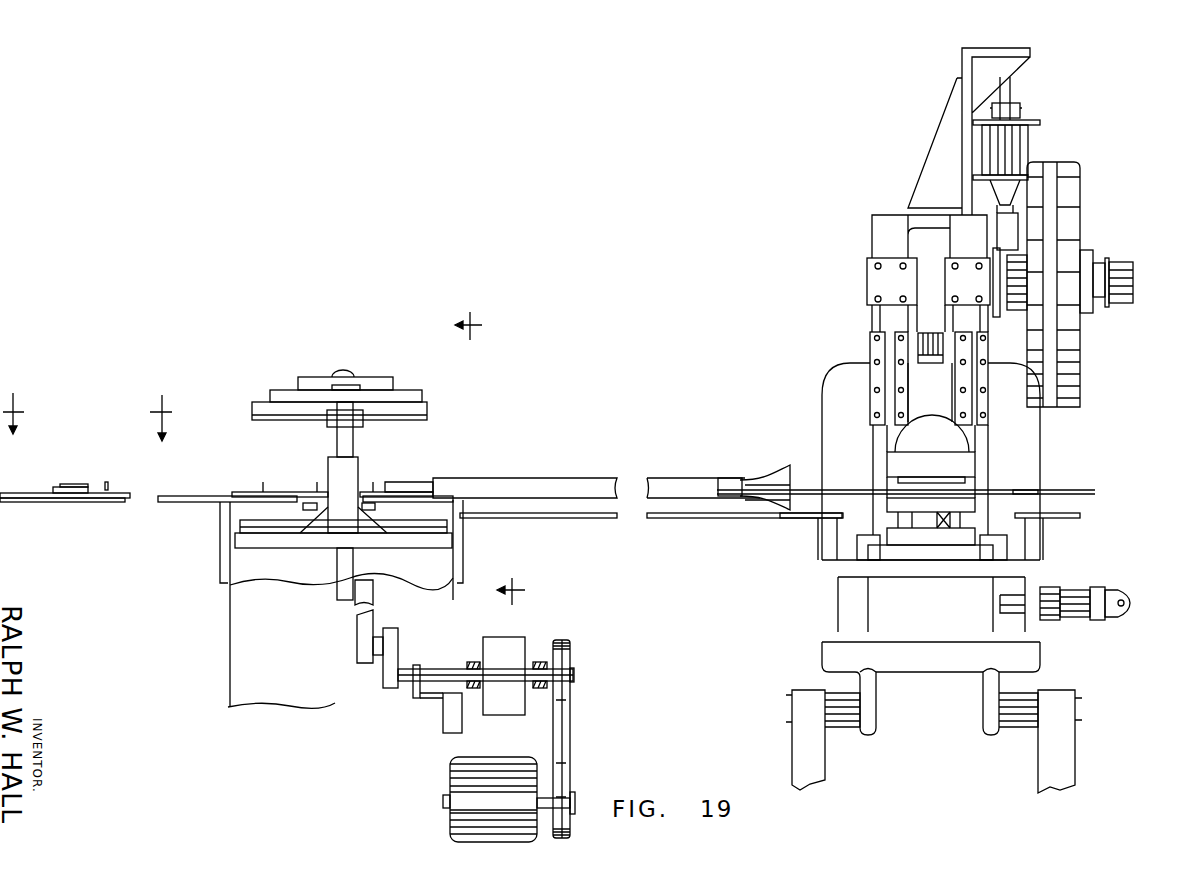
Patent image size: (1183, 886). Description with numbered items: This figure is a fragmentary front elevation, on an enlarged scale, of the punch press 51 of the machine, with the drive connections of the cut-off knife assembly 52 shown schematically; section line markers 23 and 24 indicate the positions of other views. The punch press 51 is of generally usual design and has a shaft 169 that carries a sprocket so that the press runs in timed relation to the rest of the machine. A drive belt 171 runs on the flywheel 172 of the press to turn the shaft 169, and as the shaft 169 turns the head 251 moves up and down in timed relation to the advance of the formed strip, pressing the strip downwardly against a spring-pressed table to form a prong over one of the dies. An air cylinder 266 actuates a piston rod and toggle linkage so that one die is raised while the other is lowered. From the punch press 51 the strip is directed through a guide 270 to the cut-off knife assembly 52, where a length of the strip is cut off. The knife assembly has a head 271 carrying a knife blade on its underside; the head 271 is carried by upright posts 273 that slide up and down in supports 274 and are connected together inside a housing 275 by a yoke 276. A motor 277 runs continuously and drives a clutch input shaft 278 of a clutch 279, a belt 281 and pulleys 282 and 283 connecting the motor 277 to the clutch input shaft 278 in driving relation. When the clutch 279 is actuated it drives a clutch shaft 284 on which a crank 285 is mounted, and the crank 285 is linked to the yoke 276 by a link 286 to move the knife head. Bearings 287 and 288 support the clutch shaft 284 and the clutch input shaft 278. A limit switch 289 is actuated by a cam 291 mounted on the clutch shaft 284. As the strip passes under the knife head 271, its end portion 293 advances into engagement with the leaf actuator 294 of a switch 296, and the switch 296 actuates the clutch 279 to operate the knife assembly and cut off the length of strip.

The punch press 51 is at (864, 225).
The drive belt 171 is at (1050, 162).
The flywheel 172 is at (1068, 339).
The shaft 169 is at (1122, 275).
The head 251 is at (955, 465).
The air cylinder 266 is at (1078, 612).
The cut-off knife assembly 52 is at (363, 366).
The section line 23 is at (509, 458).
The section line 24 is at (86, 409).
The head 271 is at (405, 398).
The upright posts 273 is at (348, 446).
The supports 274 is at (332, 468).
The guide 270 is at (555, 487).
The housing 275 is at (443, 566).
The yoke 276 is at (340, 589).
The link 286 is at (357, 620).
The crank 285 is at (390, 645).
The clutch shaft 284 is at (425, 674).
The clutch 279 is at (500, 643).
The pulley 283 is at (571, 645).
The clutch input shaft 278 is at (575, 678).
The belt 281 is at (560, 752).
The pulley 282 is at (563, 781).
The cam 291 is at (413, 688).
The limit switch 289 is at (420, 700).
The bearing 287 is at (470, 690).
The bearing 288 is at (540, 690).
The motor 277 is at (470, 775).
The leaf actuator 294 is at (55, 487).
The switch 296 is at (78, 484).
The end portion 293 is at (73, 498).